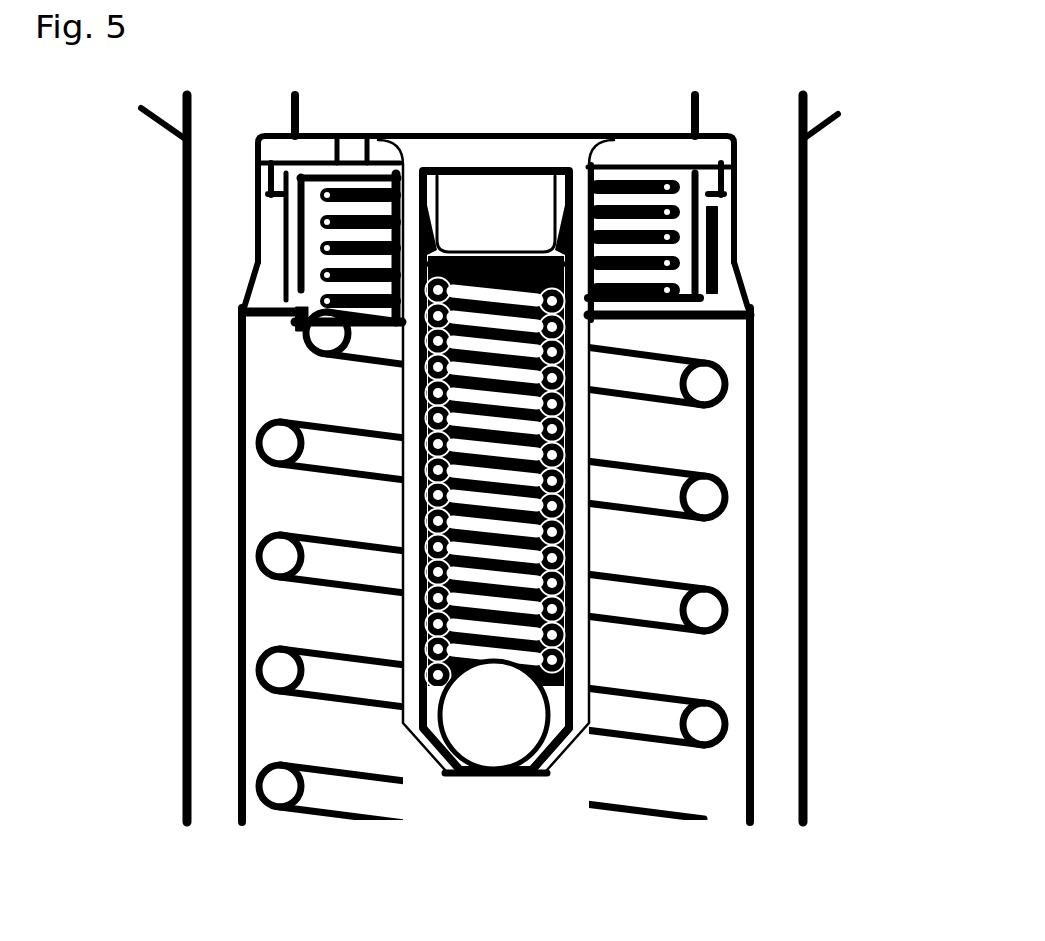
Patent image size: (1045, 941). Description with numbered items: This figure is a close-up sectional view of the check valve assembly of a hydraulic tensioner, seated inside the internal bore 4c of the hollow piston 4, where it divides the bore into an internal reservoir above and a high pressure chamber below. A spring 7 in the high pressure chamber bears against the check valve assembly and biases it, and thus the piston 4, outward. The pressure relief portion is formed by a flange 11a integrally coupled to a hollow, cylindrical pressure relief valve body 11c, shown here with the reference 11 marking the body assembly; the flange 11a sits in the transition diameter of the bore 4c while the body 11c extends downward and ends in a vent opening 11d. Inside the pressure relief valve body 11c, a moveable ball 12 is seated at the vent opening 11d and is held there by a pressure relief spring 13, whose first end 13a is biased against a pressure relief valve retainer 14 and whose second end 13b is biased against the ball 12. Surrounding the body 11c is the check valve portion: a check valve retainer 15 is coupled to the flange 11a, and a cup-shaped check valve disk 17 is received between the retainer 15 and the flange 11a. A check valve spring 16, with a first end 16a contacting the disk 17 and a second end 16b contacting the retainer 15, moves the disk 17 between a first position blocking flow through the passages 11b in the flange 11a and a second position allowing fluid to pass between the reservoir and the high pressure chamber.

The hollow piston 4 is at (773, 787).
The internal bore 4c is at (742, 640).
The spring 7 is at (283, 678).
The valve body 11 is at (400, 533).
The flange 11a is at (287, 152).
The passages 11b is at (350, 147).
The pressure relief valve body 11c is at (572, 723).
The vent opening 11d is at (492, 777).
The ball 12 is at (503, 733).
The pressure relief spring 13 is at (572, 435).
The first end of the pressure relief spring 13a is at (573, 287).
The second end of the pressure relief spring 13b is at (405, 712).
The pressure relief valve retainer 14 is at (445, 255).
The check valve retainer 15 is at (327, 310).
The check valve spring 16 is at (320, 250).
The first end of the check valve spring 16a is at (317, 192).
The second end of the check valve spring 16b is at (317, 293).
The check valve disk 17 is at (680, 205).